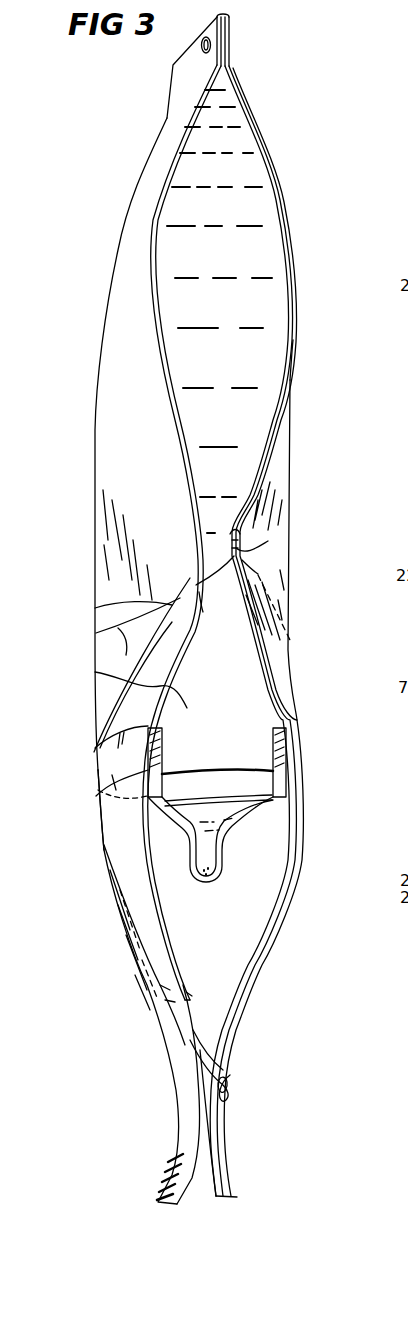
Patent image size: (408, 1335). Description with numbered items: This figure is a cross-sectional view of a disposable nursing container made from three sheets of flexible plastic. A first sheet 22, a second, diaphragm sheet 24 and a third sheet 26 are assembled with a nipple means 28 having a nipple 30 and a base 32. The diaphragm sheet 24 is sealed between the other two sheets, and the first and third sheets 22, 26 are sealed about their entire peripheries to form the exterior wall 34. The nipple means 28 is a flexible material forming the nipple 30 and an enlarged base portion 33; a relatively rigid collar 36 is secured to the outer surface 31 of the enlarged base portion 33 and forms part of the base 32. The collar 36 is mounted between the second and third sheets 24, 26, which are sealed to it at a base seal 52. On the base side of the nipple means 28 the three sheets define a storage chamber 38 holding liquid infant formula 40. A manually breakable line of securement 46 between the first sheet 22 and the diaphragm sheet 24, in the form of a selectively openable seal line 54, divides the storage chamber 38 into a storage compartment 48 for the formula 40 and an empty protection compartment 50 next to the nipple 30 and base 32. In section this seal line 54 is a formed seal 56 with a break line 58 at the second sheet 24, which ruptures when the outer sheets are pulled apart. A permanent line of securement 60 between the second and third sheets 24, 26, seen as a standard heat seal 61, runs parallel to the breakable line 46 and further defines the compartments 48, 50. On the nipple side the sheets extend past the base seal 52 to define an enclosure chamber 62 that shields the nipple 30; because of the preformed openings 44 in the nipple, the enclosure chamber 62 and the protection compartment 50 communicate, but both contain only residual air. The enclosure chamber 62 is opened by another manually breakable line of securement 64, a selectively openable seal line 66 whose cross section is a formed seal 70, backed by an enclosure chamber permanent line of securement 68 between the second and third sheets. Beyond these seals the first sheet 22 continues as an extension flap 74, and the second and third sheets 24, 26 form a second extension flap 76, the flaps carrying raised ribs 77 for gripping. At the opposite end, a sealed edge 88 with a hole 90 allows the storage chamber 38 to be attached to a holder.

The first sheet 22 is at (187, 477).
The second, diaphragm sheet 24 is at (290, 304).
The third sheet 26 is at (293, 318).
The nipple means 28 is at (178, 848).
The nipple 30 is at (214, 876).
The outer surface of the enlarged base portion 31 is at (150, 800).
The base 32 is at (284, 791).
The enlarged base portion 33 is at (150, 800).
The exterior wall 34 is at (268, 510).
The collar 36 is at (288, 762).
The storage chamber 38 is at (258, 258).
The liquid infant formula 40 is at (177, 242).
The preformed openings 44 is at (248, 908).
The manually breakable line of securement 46 is at (97, 633).
The storage compartment 48 is at (170, 317).
The protection compartment 50 is at (96, 672).
The base seal 52 is at (290, 745).
The selectively openable seal line 54 is at (97, 609).
The formed seal 56 is at (202, 600).
The break line 58 is at (204, 582).
The permanent line of securement 60 is at (258, 574).
The seal 61 is at (268, 541).
The enclosure chamber 62 is at (265, 852).
The manually breakable line of securement 64 is at (137, 953).
The selectively openable seal line 66 is at (173, 997).
The enclosure chamber permanent line of securement 68 is at (223, 1062).
The formed seal 70 is at (188, 1013).
The extension flap 74 is at (174, 1155).
The second extension flap 76 is at (236, 1197).
The raised ribs 77 is at (188, 1175).
The sealed edge 88 is at (175, 79).
The hole 90 is at (215, 44).